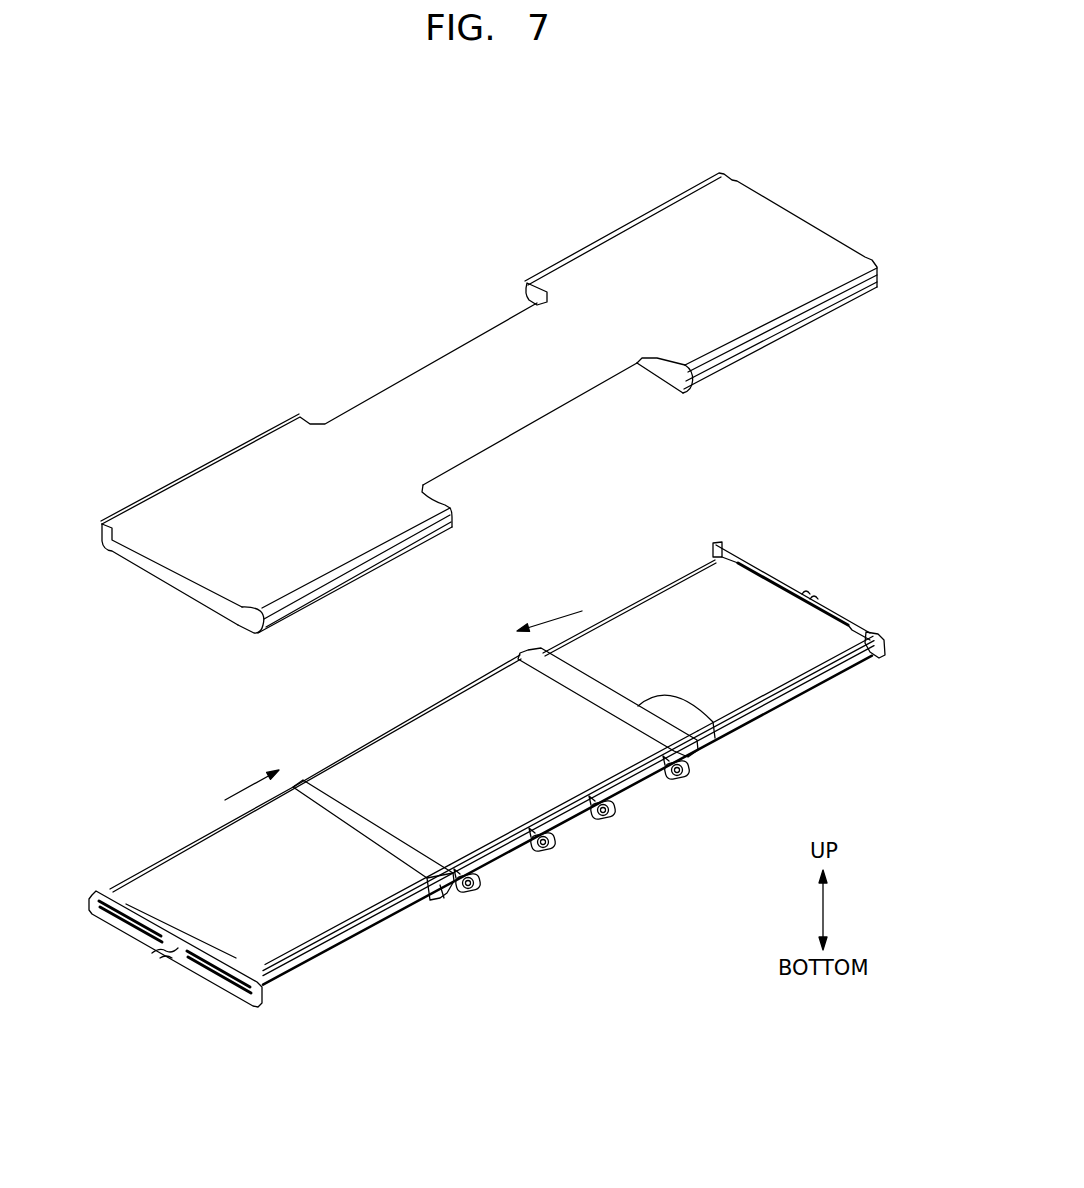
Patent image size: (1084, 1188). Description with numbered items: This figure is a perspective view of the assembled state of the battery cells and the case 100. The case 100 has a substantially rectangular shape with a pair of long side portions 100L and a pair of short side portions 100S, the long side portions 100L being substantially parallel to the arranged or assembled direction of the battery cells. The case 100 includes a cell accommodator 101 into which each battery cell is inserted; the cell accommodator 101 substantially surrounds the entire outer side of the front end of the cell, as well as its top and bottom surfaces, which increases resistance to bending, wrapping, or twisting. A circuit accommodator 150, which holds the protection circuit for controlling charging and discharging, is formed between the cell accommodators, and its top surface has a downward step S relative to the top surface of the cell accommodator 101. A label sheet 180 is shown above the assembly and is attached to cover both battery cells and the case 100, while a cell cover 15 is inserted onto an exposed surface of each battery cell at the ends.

The label sheet 180 is at (586, 268).
The case 100 is at (487, 767).
The long side portions 100L is at (440, 698).
The short side portions 100S is at (702, 732).
The downward step S is at (388, 828).
The circuit accommodator 150 is at (543, 802).
The cell accommodator 101 is at (452, 893).
The cell cover 15 is at (764, 573).